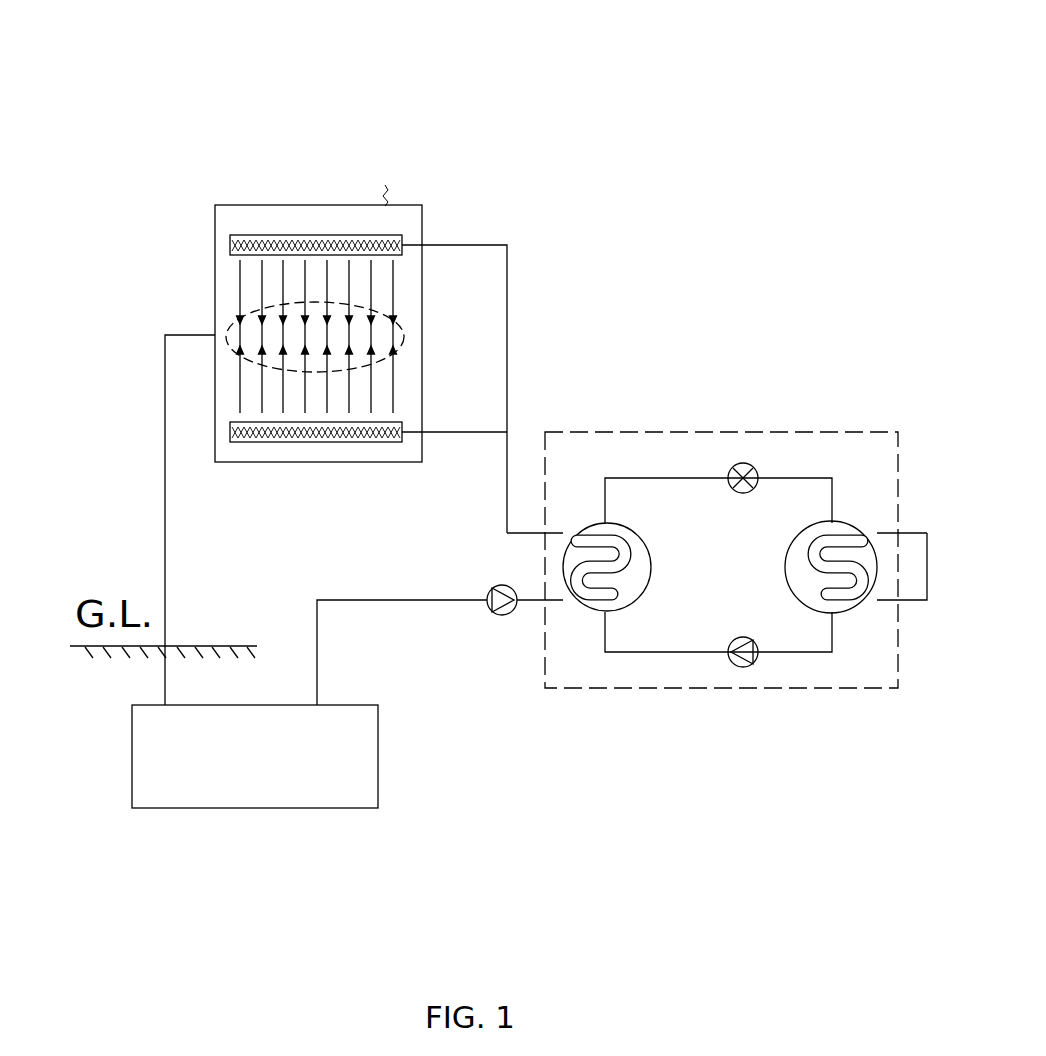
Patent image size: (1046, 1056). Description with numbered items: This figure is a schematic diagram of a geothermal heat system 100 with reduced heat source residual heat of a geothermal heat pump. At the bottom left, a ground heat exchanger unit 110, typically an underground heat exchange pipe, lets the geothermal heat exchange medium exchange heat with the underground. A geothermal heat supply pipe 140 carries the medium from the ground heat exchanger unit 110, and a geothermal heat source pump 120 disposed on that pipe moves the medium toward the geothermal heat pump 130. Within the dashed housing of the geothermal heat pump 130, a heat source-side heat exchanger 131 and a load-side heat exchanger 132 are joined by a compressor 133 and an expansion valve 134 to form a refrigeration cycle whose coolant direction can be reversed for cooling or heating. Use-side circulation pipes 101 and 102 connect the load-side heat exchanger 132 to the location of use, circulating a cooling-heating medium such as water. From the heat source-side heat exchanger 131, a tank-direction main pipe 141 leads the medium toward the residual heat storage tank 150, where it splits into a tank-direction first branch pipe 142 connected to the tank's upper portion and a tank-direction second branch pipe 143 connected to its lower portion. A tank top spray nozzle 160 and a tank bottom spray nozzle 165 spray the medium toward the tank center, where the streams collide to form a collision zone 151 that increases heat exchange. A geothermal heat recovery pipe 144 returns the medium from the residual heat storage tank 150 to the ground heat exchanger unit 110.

The geothermal heat system 100 is at (865, 98).
The use-side circulation pipe 101 is at (919, 598).
The use-side circulation pipe 102 is at (877, 533).
The ground heat exchanger unit 110 is at (308, 808).
The geothermal heat source pump 120 is at (500, 615).
The geothermal heat pump 130 is at (918, 808).
The heat source-side heat exchanger 131 is at (592, 612).
The second heat exchanger 132 is at (842, 612).
The compressor 133 is at (745, 668).
The expansion valve 134 is at (739, 493).
The geothermal heat supply pipe 140 is at (348, 598).
The tank-direction main pipe 141 is at (507, 495).
The tank-direction first branch pipe 142 is at (452, 243).
The tank-direction second branch pipe 143 is at (462, 432).
The geothermal heat recovery pipe 144 is at (163, 393).
The residual heat storage tank 150 is at (213, 255).
The collision zone 151 is at (295, 302).
The tank top spray nozzle 160 is at (250, 238).
The tank bottom spray nozzle 165 is at (342, 423).